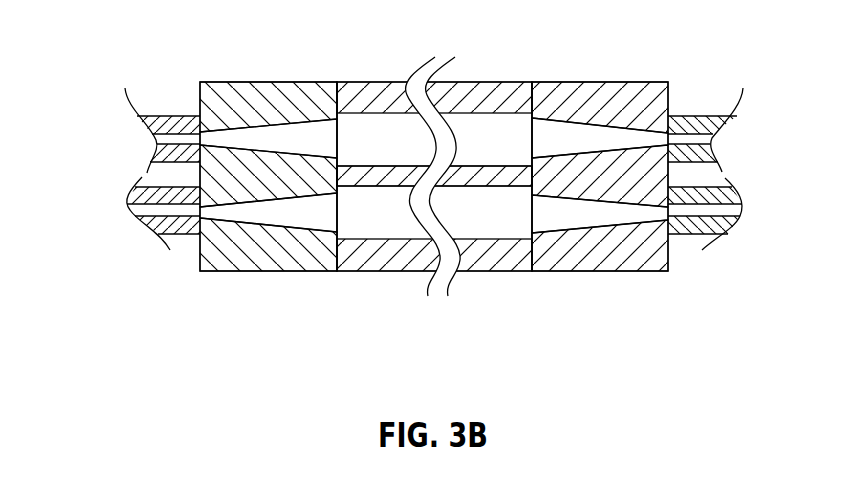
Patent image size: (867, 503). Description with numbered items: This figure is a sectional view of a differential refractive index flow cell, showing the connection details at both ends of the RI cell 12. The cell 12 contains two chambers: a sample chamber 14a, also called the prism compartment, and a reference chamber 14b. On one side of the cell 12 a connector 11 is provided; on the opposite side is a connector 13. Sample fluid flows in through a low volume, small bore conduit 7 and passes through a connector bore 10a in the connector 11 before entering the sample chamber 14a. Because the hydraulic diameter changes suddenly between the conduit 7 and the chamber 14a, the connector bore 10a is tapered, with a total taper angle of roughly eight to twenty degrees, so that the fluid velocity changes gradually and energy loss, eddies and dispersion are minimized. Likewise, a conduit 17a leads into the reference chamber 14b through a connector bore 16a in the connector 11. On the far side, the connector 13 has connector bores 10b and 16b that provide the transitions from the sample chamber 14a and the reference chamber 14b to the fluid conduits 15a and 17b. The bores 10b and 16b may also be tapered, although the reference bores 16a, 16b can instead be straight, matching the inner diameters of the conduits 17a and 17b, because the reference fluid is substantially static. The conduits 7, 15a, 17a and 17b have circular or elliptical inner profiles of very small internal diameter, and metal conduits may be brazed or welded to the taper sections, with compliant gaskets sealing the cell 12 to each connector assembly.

The conduit 7 is at (150, 88).
The connector bore 10a is at (268, 90).
The connector bore 10b is at (615, 80).
The connector 11 is at (306, 277).
The RI cell 12 is at (468, 74).
The connector 13 is at (566, 276).
The sample chamber 14a is at (434, 135).
The reference chamber 14b is at (466, 264).
The fluid conduit 15a is at (734, 86).
The connector bore 16a is at (262, 270).
The connector bore 16b is at (614, 272).
The conduit 17a is at (129, 275).
The conduit 17b is at (740, 277).